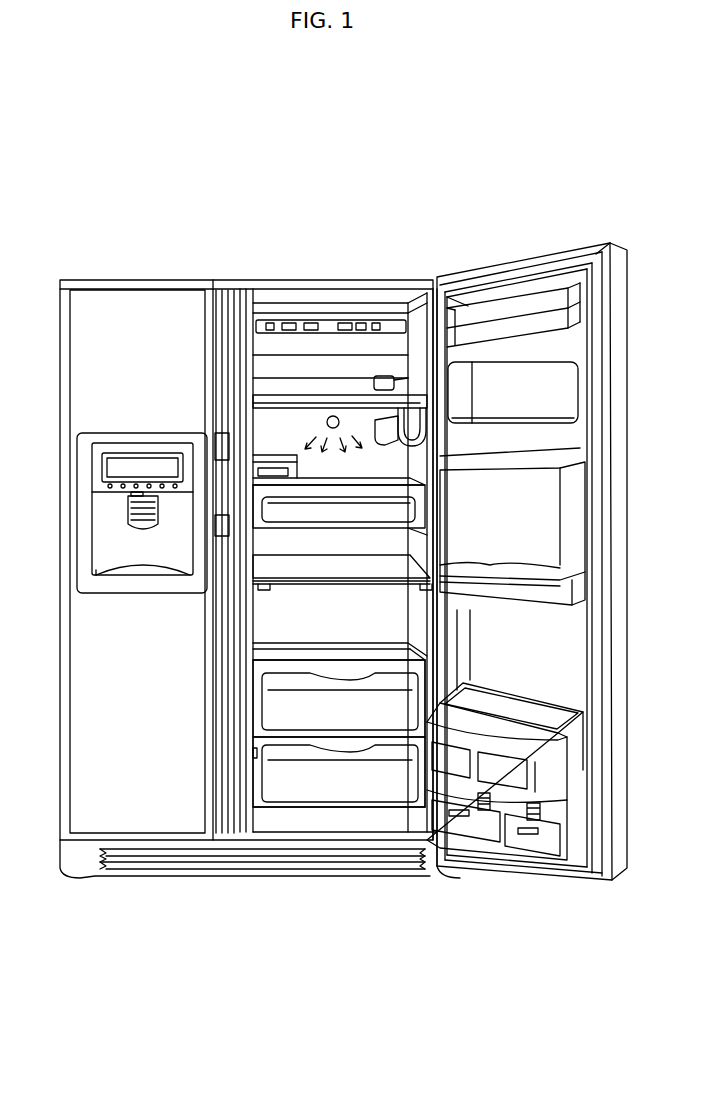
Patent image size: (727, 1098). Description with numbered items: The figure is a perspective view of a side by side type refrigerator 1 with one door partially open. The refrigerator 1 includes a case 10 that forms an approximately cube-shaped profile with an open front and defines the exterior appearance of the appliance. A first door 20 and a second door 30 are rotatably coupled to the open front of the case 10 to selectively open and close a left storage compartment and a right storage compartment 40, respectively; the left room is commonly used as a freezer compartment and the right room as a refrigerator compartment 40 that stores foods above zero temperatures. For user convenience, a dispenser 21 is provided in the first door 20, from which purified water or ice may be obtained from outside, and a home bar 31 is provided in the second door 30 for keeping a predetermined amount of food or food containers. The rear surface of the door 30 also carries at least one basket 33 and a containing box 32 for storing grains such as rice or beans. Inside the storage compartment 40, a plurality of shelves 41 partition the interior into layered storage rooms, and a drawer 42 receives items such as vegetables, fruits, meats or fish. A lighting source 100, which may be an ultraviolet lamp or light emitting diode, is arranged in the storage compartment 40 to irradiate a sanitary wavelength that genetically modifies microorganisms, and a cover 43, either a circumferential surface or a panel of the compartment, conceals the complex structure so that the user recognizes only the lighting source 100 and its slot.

The refrigerator 1 is at (94, 219).
The case 10 is at (337, 268).
The first door 20 is at (146, 298).
The dispenser 21 is at (114, 556).
The second door 30 is at (618, 406).
The home bar 31 is at (535, 513).
The containing box 32 is at (578, 768).
The basket 33 is at (510, 300).
The storage compartment 40 is at (340, 617).
The shelves 41 is at (303, 567).
The drawer 42 is at (377, 710).
The cover 43 is at (372, 418).
The lighting source 100 is at (326, 422).